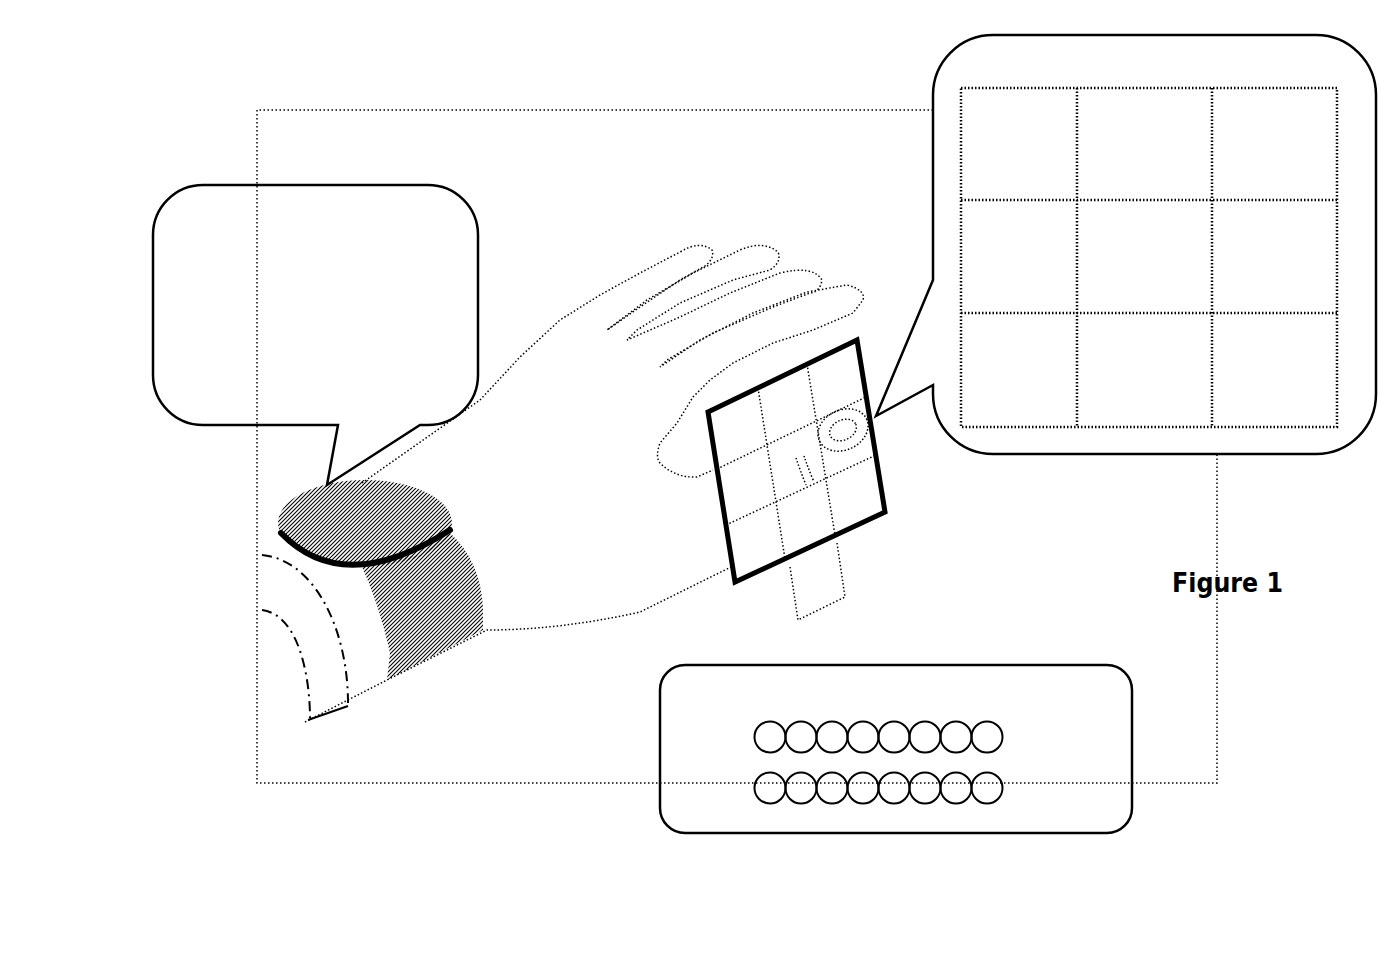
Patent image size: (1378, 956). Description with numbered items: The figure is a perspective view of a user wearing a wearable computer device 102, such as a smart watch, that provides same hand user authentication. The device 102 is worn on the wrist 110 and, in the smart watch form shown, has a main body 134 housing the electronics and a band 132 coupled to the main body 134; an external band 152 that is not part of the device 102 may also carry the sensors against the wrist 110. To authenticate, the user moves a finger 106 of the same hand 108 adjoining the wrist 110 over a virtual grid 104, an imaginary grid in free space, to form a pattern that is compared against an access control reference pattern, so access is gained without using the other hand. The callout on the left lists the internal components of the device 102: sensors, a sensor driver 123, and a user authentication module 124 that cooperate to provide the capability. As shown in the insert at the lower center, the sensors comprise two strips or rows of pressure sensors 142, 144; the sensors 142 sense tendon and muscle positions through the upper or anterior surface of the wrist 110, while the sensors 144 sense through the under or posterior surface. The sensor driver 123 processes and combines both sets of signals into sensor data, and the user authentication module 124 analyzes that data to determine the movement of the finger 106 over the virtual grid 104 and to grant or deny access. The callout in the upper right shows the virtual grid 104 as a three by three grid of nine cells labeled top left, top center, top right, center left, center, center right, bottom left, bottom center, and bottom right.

The wearable computer device 102 is at (360, 282).
The virtual grid 104 is at (1139, 83).
The finger 106 is at (837, 457).
The hand 108 is at (578, 554).
The wrist 110 is at (493, 627).
The sensor driver 123 is at (281, 325).
The user authentication module 124 is at (280, 364).
The band 132 is at (420, 647).
The main body 134 is at (435, 502).
The pressure sensors 142 is at (913, 740).
The pressure sensors 144 is at (912, 791).
The external band 152 is at (327, 697).